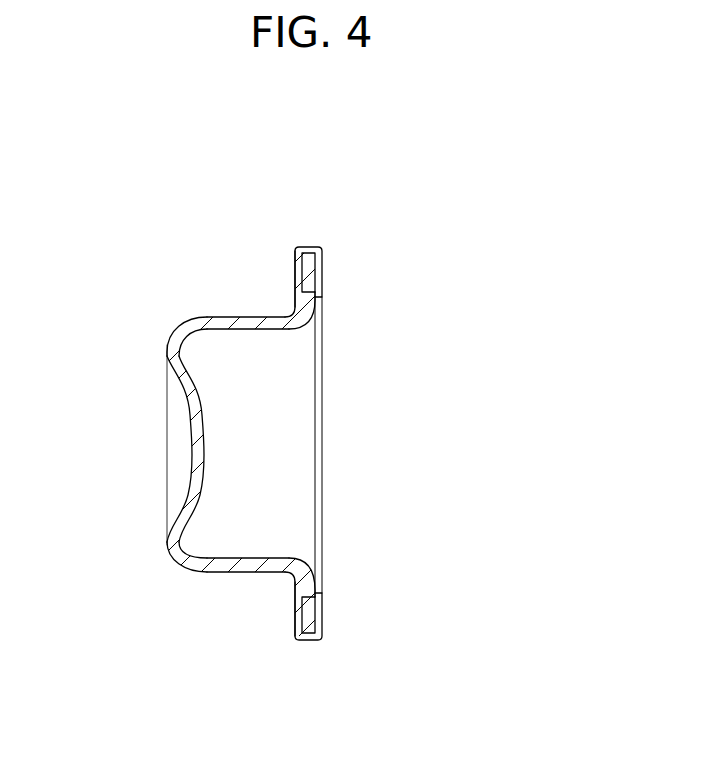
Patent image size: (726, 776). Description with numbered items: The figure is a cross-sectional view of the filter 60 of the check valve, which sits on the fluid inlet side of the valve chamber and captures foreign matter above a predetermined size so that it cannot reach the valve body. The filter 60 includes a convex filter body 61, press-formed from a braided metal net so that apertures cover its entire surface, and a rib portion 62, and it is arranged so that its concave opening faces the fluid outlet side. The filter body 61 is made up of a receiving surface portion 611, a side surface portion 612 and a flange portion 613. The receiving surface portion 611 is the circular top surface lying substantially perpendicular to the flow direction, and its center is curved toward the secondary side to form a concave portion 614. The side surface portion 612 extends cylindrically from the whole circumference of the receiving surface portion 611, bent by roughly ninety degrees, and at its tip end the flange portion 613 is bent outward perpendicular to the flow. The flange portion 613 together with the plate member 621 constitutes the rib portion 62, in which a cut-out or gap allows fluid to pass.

The filter 60 is at (131, 240).
The filter body 61 is at (292, 720).
The receiving surface portion 611 is at (167, 520).
The side surface portion 612 is at (220, 572).
The flange portion 613 is at (302, 613).
The concave portion 614 is at (190, 447).
The rib portion 62 is at (388, 443).
The plate member 621 is at (318, 621).